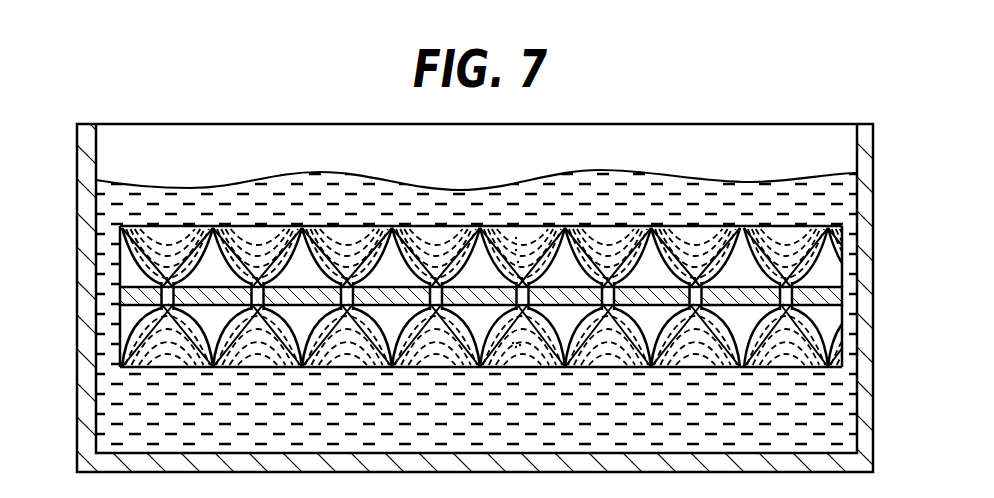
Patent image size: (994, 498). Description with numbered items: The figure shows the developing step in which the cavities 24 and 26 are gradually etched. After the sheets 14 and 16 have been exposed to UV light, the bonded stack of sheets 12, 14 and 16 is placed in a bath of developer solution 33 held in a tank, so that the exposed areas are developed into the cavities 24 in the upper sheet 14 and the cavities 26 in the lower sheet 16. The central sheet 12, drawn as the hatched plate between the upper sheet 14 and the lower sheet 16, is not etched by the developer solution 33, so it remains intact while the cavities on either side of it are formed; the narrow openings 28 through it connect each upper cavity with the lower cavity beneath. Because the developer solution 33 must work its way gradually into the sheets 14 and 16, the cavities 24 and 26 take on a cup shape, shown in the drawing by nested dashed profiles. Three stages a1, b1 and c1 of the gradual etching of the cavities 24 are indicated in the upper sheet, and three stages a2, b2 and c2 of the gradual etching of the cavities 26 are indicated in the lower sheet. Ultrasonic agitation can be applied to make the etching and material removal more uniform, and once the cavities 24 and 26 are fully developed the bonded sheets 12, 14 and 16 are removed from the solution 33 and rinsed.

The sheet 12 is at (123, 297).
The sheet 14 is at (123, 247).
The sheet 16 is at (120, 348).
The cavities 24 is at (414, 268).
The cavities 26 is at (407, 333).
The connecting necks through substrate 28 is at (787, 278).
The developer solution 33 is at (247, 190).
The first stage of gradual etching of cavities 24 a1 is at (516, 238).
The second stage of gradual etching of cavities 24 b1 is at (516, 250).
The third stage of gradual etching of cavities 24 c1 is at (518, 262).
The first stage of gradual etching of cavities 26 a2 is at (513, 343).
The second stage of gradual etching of cavities 26 b2 is at (516, 347).
The third stage of gradual etching of cavities 26 c2 is at (520, 345).